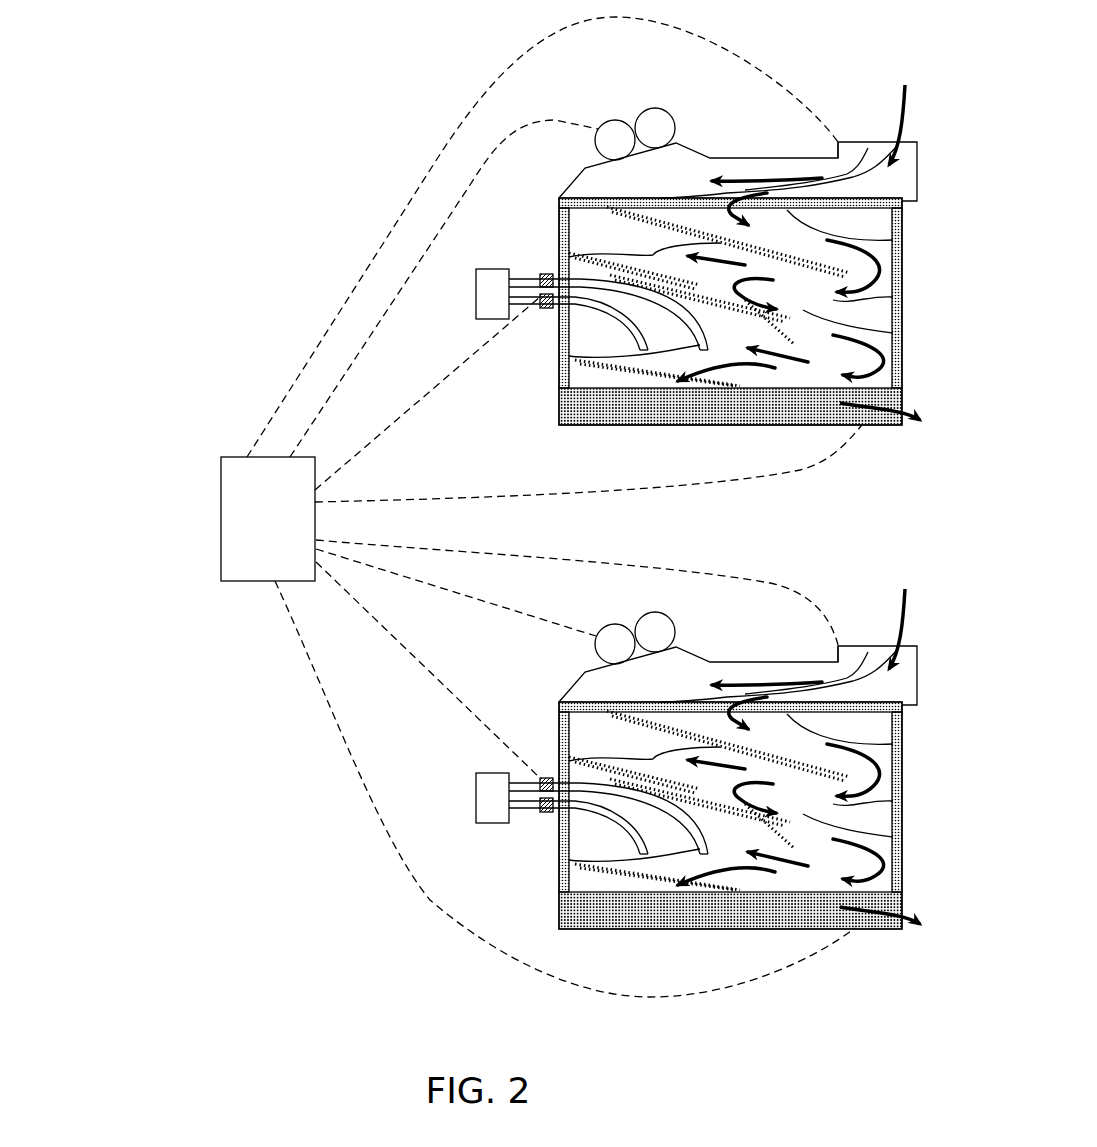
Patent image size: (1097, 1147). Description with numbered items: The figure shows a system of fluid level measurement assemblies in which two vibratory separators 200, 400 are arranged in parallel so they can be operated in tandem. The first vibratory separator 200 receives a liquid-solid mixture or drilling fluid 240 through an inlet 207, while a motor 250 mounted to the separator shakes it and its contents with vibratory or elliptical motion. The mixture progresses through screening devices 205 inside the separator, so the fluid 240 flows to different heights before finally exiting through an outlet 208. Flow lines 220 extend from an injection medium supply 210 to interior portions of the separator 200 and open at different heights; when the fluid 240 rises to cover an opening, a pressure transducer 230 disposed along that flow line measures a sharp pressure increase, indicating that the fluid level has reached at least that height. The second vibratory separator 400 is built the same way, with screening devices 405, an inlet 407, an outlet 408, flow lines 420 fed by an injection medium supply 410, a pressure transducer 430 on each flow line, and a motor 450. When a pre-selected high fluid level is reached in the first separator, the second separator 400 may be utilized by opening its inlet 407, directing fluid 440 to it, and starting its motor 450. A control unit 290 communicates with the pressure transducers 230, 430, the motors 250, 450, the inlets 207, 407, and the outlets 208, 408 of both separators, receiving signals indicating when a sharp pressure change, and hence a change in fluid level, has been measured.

The first vibratory separator 200 is at (558, 368).
The screening devices 205 is at (830, 302).
The inlet 207 is at (886, 139).
The outlet 208 is at (905, 452).
The injection medium supply 210 is at (476, 293).
The flow lines 220 is at (585, 283).
The pressure transducer 230 is at (541, 296).
The fluid 240 is at (888, 82).
The motor 250 is at (612, 120).
The control unit 290 is at (221, 523).
The second vibratory separator 400 is at (558, 887).
The screening devices 405 is at (830, 806).
The inlet 407 is at (886, 643).
The outlet 408 is at (905, 956).
The injection medium supply 410 is at (476, 797).
The flow lines 420 is at (628, 810).
The pressure transducer 430 is at (541, 778).
The fluid 440 is at (888, 586).
The motor 450 is at (612, 624).